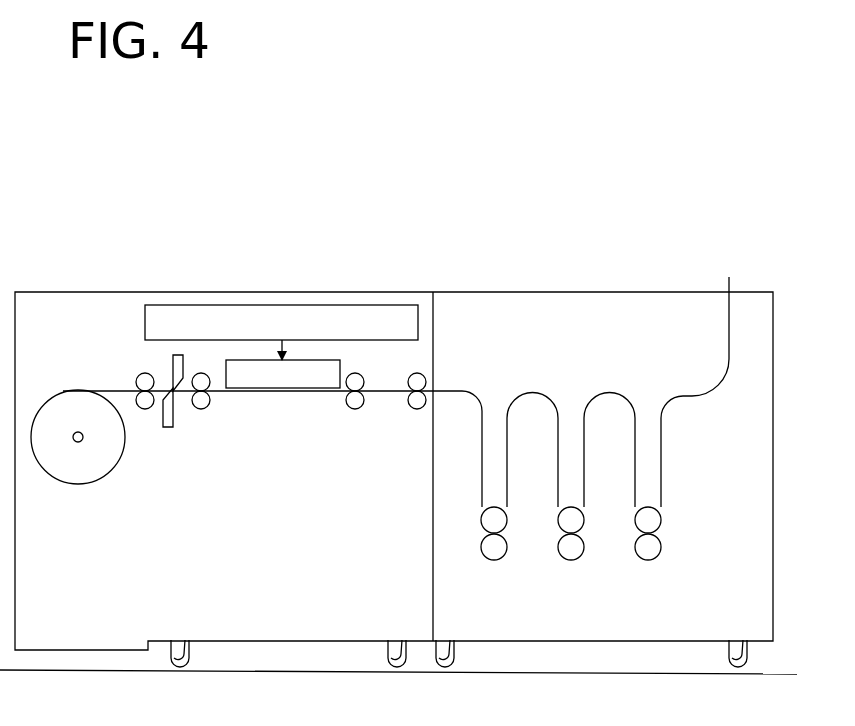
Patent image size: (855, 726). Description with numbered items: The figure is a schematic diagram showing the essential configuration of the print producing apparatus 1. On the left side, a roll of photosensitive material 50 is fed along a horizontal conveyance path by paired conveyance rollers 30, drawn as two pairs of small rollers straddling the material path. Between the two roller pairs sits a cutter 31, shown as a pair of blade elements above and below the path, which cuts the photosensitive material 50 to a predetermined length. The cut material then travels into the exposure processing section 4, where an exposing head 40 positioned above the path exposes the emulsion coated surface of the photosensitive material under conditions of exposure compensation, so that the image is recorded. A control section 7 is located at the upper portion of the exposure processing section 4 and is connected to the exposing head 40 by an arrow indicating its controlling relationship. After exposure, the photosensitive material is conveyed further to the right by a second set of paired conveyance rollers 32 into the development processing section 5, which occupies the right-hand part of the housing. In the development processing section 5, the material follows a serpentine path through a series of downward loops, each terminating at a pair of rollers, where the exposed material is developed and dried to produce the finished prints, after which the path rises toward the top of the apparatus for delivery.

The print producing apparatus 1 is at (522, 215).
The exposure processing section 4 is at (252, 404).
The development processing section 5 is at (642, 326).
The control section 7 is at (380, 305).
The paired conveyance rollers 30 is at (145, 409).
The cutter 31 is at (172, 366).
The paired conveyance rollers 32 is at (355, 409).
The exposing head 40 is at (340, 367).
The photosensitive material 50 is at (98, 391).